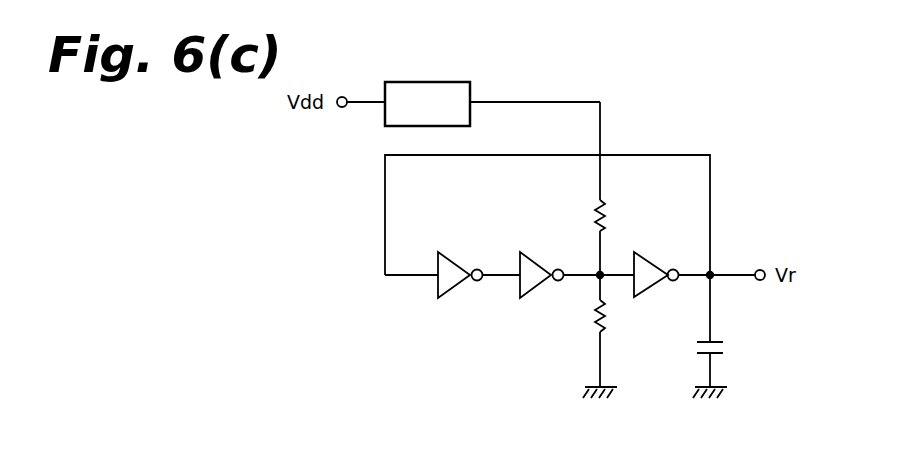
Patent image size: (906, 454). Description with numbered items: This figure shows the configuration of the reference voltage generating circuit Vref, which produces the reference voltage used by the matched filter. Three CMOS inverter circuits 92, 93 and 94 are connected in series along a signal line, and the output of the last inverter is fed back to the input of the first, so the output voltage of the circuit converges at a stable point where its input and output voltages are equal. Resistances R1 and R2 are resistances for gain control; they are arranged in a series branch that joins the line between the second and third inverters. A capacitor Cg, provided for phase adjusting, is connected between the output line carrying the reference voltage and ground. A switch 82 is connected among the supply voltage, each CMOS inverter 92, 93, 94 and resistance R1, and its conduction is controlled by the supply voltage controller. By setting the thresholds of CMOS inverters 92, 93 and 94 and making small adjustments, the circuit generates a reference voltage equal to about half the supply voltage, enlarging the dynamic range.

The switch 82 is at (437, 82).
The CMOS inverter circuit 92 is at (451, 254).
The CMOS inverter circuit 93 is at (529, 254).
The CMOS inverter circuit 94 is at (646, 253).
The resistance R1 is at (582, 215).
The resistance R2 is at (582, 316).
The capacitor Cg is at (728, 350).
The reference voltage generating circuit Vref is at (752, 165).